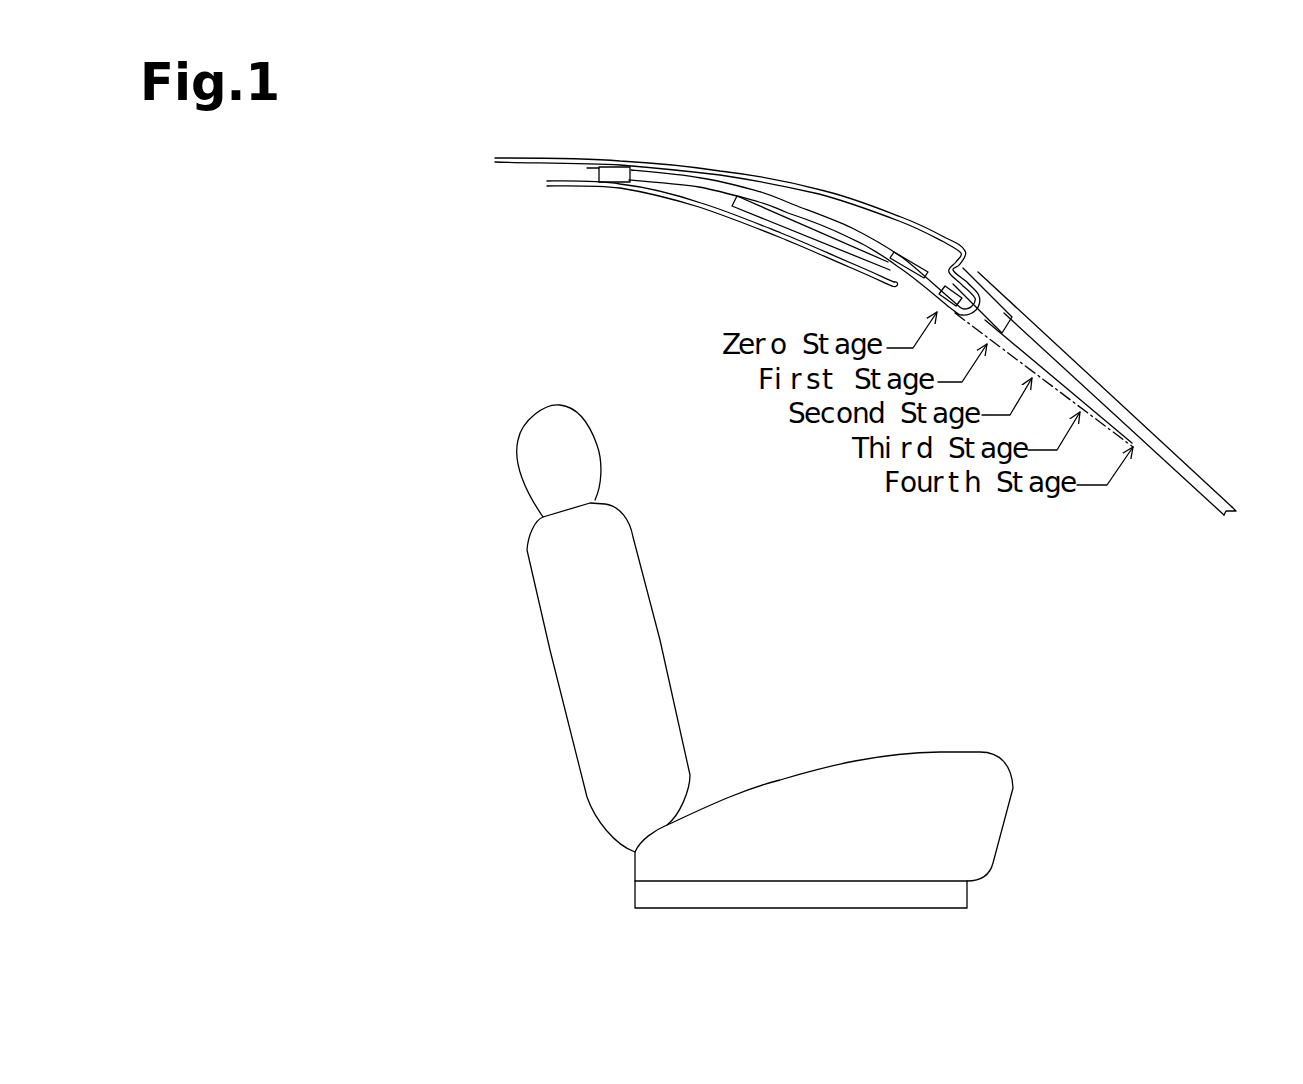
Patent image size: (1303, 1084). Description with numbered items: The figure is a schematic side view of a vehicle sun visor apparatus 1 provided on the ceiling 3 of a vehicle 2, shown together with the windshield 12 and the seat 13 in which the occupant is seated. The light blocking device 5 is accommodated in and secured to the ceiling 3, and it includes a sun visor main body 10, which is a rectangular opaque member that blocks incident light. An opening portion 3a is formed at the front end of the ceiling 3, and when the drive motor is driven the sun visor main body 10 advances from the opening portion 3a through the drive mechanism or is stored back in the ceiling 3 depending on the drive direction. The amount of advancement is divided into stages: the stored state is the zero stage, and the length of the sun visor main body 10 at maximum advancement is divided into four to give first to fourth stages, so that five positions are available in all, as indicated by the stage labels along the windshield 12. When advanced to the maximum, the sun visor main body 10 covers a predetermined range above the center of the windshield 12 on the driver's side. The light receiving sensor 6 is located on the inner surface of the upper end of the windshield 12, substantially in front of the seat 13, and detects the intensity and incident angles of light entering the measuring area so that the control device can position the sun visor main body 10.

The sun visor apparatus 1 is at (837, 245).
The vehicle 2 is at (677, 163).
The ceiling 3 is at (653, 194).
The opening portion 3a is at (887, 289).
The light blocking device 5 is at (865, 257).
The light receiving sensor 6 is at (990, 306).
The sun visor main body 10 is at (767, 227).
The windshield 12 is at (1215, 491).
The seat 13 is at (550, 654).